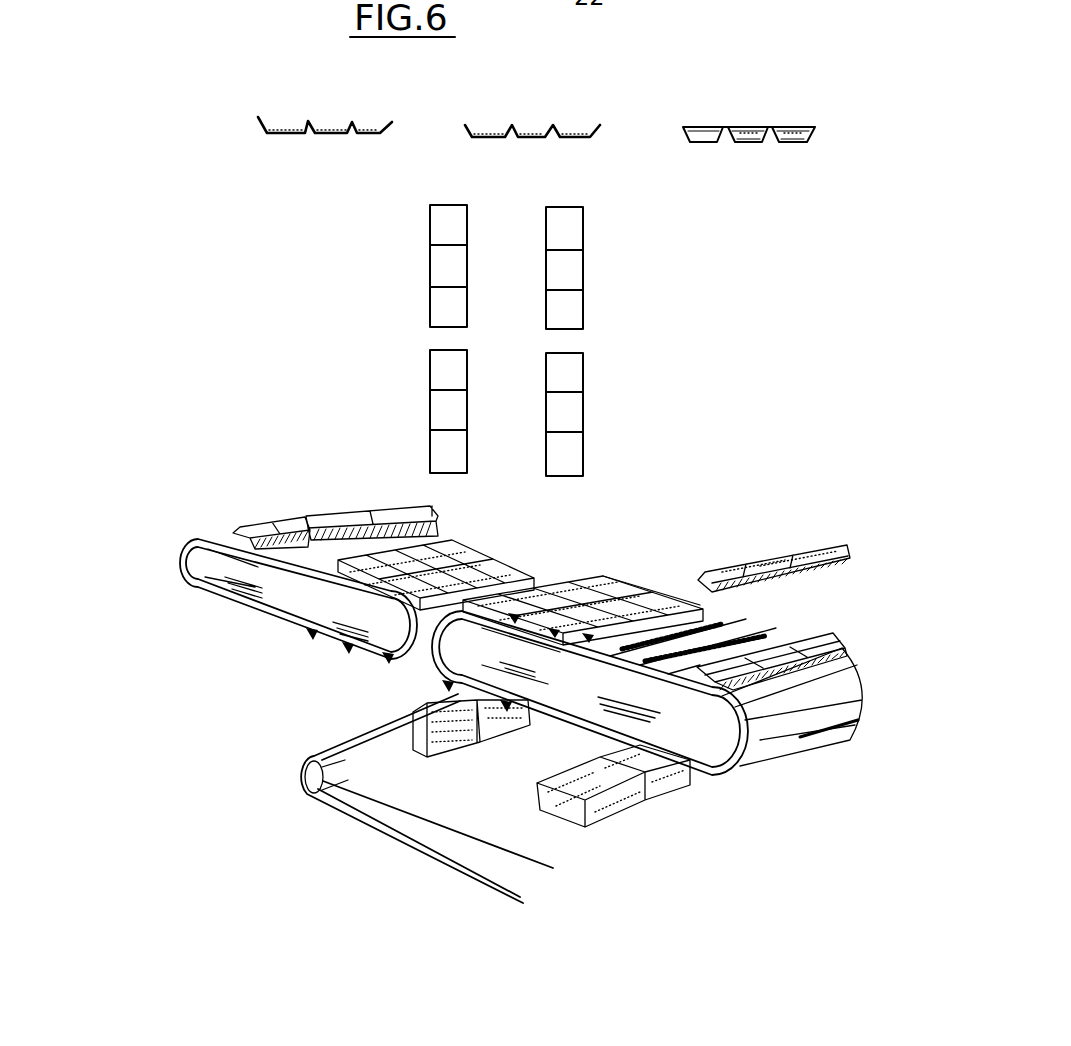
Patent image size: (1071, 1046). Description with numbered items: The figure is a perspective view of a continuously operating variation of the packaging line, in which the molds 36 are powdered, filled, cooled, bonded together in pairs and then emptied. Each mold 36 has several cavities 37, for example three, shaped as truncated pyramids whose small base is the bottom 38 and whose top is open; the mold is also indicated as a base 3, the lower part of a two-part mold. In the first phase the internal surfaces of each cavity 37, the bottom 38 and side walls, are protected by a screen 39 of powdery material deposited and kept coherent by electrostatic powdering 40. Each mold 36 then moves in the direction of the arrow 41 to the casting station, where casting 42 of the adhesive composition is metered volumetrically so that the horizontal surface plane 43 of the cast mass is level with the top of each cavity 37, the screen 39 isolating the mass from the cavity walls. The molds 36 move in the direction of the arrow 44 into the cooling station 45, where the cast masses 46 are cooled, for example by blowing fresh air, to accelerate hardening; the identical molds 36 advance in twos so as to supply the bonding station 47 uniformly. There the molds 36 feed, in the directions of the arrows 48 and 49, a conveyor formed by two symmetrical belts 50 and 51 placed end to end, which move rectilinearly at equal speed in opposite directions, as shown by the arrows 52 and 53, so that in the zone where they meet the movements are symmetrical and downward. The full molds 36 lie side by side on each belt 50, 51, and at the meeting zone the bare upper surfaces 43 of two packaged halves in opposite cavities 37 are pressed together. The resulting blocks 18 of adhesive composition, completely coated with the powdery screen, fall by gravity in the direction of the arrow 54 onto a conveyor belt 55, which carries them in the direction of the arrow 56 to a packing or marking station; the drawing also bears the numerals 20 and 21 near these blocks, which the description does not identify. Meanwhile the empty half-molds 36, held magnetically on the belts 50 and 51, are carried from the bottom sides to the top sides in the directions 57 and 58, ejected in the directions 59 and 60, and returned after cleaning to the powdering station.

The base 3 is at (532, 143).
The blocks of adhesive composition 18 is at (400, 734).
The filled bar 20 is at (408, 716).
The filling 21 is at (457, 730).
The mold 36 is at (308, 136).
The cavity 37 is at (383, 136).
The bottom 38 is at (335, 136).
The screen of powdery material 39 is at (300, 117).
The electrostatic powdering 40 is at (372, 117).
The arrow 41 is at (457, 132).
The casting 42 is at (490, 123).
The horizontal surface plane 43 is at (703, 127).
The arrow 44 is at (448, 157).
The cooling station 45 is at (617, 350).
The cast masses 46 is at (790, 132).
The bonding station 47 is at (257, 633).
The arrow 48 is at (442, 477).
The arrow 49 is at (630, 523).
The belt 50 is at (203, 588).
The belt 51 is at (800, 738).
The arrow 52 is at (357, 599).
The arrow 53 is at (565, 660).
The arrow 54 is at (423, 665).
The conveyor belt 55 is at (427, 833).
The arrow 56 is at (637, 805).
The direction 57 is at (265, 623).
The direction 58 is at (602, 747).
The direction 59 is at (250, 127).
The direction 60 is at (877, 607).